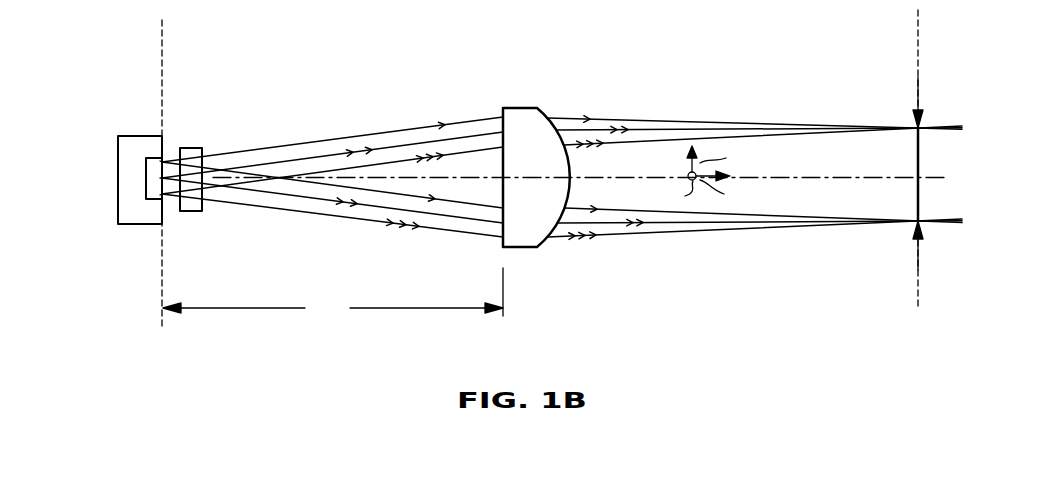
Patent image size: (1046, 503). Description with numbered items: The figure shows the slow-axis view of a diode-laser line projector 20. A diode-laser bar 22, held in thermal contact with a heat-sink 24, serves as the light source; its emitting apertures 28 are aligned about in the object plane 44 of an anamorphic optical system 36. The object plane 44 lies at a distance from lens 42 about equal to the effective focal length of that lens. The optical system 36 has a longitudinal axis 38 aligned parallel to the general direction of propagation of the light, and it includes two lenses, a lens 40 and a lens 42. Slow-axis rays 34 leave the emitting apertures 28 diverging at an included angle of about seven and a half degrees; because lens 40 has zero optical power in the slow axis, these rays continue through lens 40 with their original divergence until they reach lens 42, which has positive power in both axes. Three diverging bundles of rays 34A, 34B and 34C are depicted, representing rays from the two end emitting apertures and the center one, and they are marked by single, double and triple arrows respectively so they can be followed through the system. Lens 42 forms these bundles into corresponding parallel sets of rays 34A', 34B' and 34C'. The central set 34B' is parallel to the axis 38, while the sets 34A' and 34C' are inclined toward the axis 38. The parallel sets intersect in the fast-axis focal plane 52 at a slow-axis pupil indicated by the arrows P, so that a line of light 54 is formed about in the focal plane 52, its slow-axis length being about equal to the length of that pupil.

The diode-laser line projector 20 is at (616, 324).
The diode-laser bar 22 is at (157, 200).
The heat-sink 24 is at (143, 137).
The emitting aperture 28 is at (162, 194).
The slow-axis rays 34 is at (167, 160).
The first diverging set of slow-axis rays 34A is at (332, 140).
The second diverging set of slow-axis rays 34B is at (332, 203).
The third diverging set of slow-axis rays 34C is at (332, 211).
The first parallel set of slow-axis rays 34A' is at (755, 149).
The second parallel set of slow-axis rays 34B' is at (759, 167).
The third parallel set of slow-axis rays 34C' is at (755, 158).
The anamorphic optical system 36 is at (350, 78).
The longitudinal axis 38 is at (466, 180).
The first lens 40 is at (193, 212).
The second lens 42 is at (526, 107).
The object plane 44 is at (165, 46).
The fast-axis focal plane 52 is at (916, 30).
The line of light 54 is at (920, 158).